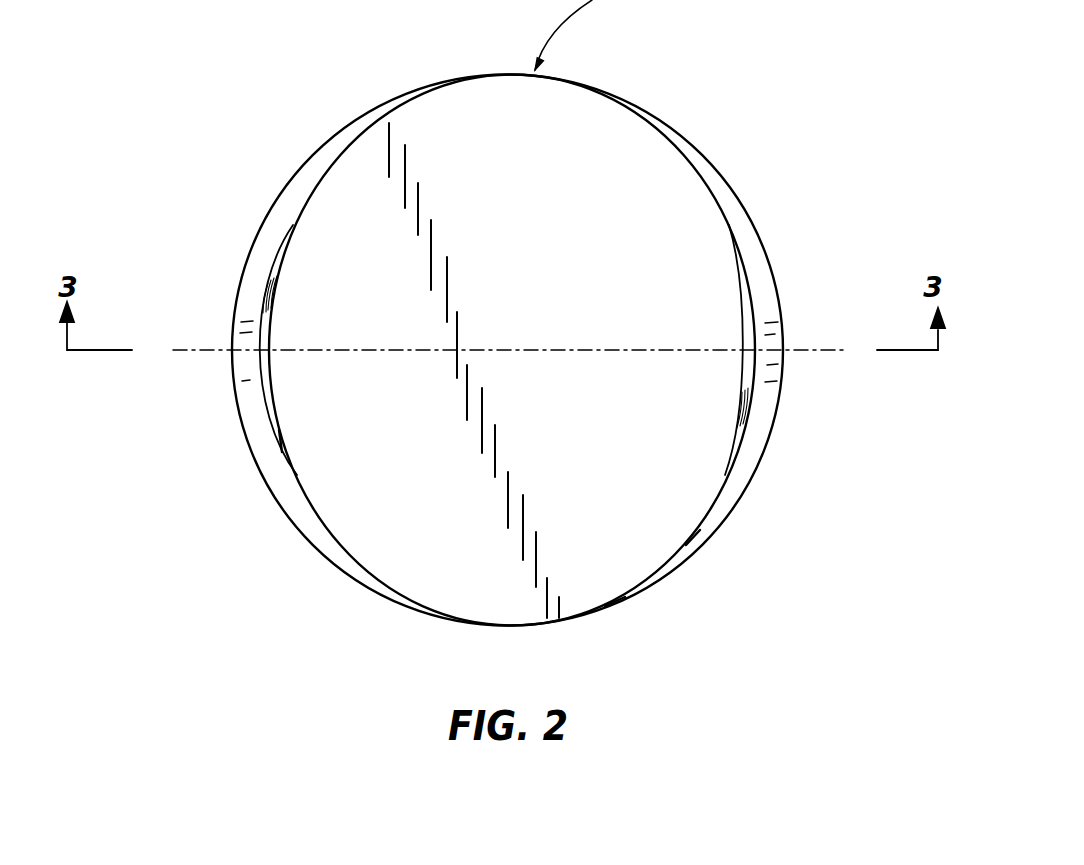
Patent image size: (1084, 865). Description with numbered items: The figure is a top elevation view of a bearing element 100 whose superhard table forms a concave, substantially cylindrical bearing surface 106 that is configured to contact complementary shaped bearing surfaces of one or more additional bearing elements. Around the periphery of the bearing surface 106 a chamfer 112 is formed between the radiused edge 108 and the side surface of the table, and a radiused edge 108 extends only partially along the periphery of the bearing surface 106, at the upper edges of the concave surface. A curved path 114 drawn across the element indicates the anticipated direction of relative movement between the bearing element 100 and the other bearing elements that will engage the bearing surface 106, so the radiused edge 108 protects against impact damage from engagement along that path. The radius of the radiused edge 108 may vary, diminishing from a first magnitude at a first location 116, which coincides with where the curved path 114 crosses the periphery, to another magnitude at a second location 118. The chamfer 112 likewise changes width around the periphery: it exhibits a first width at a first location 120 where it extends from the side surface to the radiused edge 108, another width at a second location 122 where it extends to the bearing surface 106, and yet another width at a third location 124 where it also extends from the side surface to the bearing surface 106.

The bearing element 100 is at (280, 593).
The bearing surface 106 is at (557, 147).
The radiused edge 108 is at (260, 330).
The chamfer 112 is at (735, 232).
The curved path 114 is at (800, 352).
The first location 116 is at (261, 356).
The second location 118 is at (275, 440).
The first location 120 is at (772, 337).
The second location 122 is at (693, 538).
The third location 124 is at (615, 602).